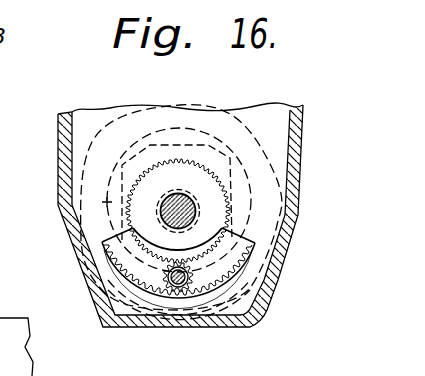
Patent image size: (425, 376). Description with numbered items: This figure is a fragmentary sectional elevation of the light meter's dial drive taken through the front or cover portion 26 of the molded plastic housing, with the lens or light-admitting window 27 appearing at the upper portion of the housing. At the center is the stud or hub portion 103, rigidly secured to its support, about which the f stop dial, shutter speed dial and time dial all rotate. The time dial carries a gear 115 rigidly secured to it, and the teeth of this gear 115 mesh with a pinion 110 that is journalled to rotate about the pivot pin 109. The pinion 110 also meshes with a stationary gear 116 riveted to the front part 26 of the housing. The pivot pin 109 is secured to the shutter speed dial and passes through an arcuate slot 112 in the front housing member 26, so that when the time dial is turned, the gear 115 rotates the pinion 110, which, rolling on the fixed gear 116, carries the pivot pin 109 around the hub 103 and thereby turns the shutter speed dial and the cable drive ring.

The front or cover portion 26 is at (297, 255).
The lens or light-admitting window 27 is at (23, 318).
The stud or hub portion 103 is at (178, 193).
The pivot pin 109 is at (181, 285).
The pinion 110 is at (196, 268).
The arcuate slot 112 is at (255, 243).
The gear 115 is at (128, 203).
The stationary gear 116 is at (190, 286).